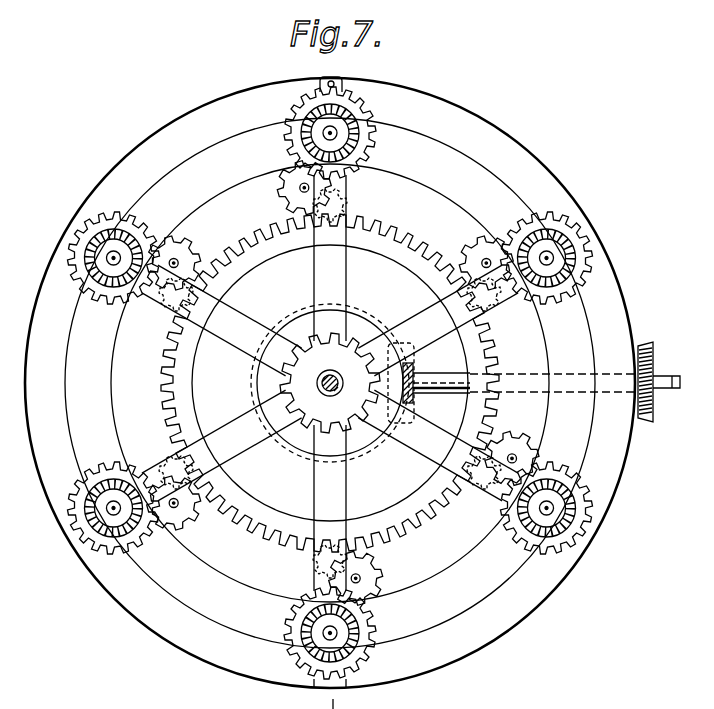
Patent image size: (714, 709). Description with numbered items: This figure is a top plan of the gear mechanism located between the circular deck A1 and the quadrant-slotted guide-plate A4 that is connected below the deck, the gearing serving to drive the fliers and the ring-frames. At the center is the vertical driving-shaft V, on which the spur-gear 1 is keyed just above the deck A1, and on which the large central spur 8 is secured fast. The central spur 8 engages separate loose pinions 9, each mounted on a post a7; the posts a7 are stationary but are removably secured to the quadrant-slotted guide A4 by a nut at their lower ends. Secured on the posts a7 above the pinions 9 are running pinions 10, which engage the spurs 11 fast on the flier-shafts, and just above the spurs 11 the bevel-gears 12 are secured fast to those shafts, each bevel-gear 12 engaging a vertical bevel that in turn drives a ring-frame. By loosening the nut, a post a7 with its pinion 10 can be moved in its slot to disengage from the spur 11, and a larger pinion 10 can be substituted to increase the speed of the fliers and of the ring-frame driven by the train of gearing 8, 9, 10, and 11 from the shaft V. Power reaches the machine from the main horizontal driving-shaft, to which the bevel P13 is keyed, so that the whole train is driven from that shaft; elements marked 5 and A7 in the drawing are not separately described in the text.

The spur-gear 1 is at (345, 351).
The hub 5 is at (321, 386).
The large central spur 8 is at (398, 249).
The loose pinion 9 is at (518, 431).
The running pinion 10 is at (530, 453).
The post a7 is at (516, 458).
The spur 11 is at (577, 481).
The bevel-gear 12 is at (532, 528).
The circular deck A1 is at (618, 306).
The quadrant-slotted guide-plate A4 is at (330, 383).
The spoke arm A7 is at (362, 690).
The bevel P13 is at (654, 407).
The vertical driving-shaft V is at (322, 408).